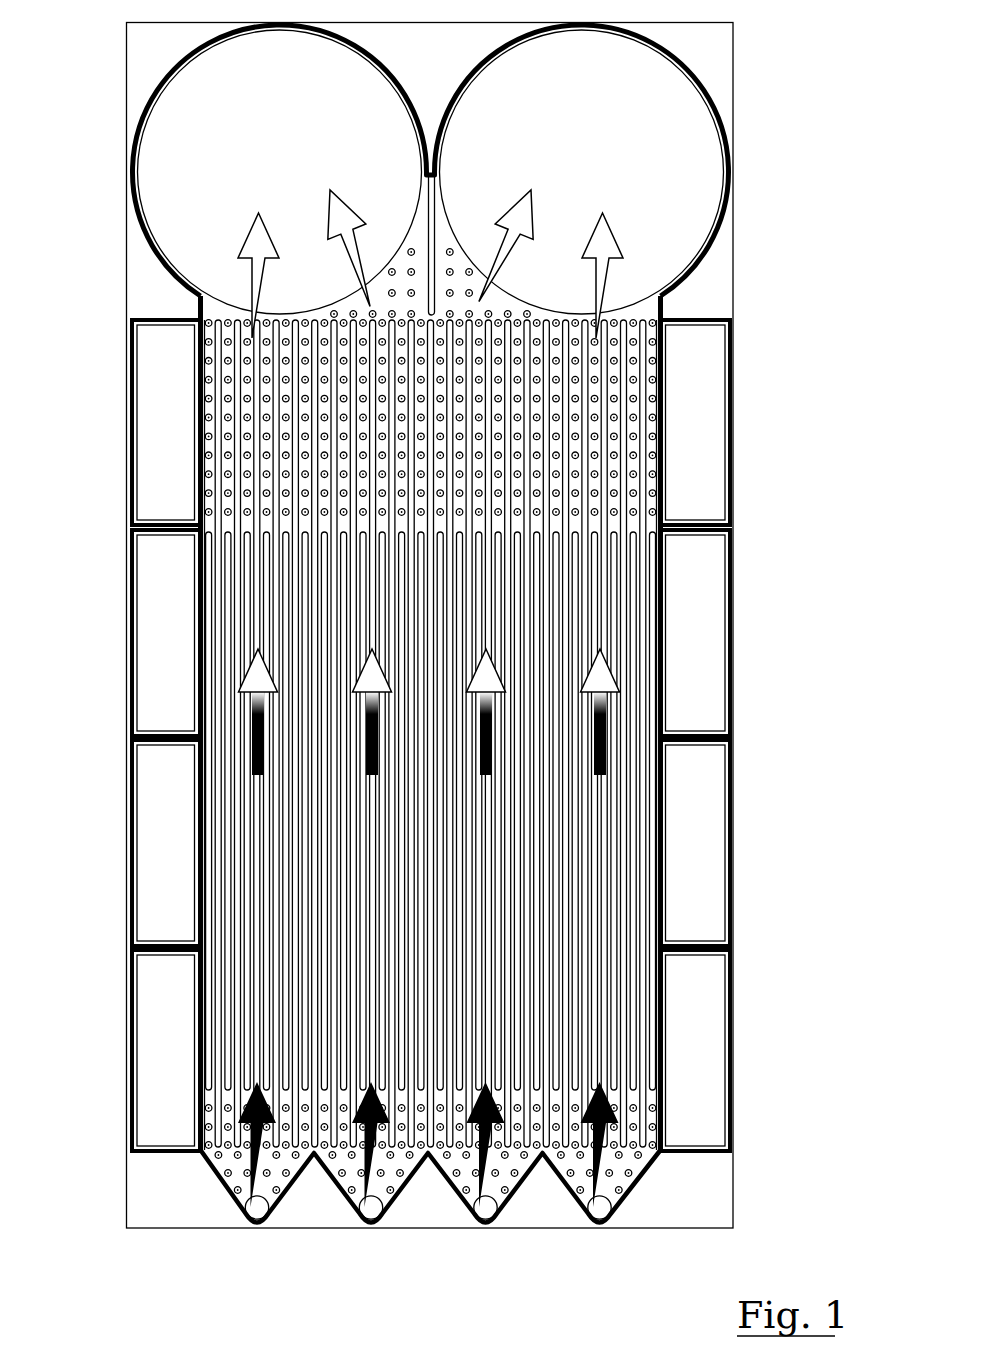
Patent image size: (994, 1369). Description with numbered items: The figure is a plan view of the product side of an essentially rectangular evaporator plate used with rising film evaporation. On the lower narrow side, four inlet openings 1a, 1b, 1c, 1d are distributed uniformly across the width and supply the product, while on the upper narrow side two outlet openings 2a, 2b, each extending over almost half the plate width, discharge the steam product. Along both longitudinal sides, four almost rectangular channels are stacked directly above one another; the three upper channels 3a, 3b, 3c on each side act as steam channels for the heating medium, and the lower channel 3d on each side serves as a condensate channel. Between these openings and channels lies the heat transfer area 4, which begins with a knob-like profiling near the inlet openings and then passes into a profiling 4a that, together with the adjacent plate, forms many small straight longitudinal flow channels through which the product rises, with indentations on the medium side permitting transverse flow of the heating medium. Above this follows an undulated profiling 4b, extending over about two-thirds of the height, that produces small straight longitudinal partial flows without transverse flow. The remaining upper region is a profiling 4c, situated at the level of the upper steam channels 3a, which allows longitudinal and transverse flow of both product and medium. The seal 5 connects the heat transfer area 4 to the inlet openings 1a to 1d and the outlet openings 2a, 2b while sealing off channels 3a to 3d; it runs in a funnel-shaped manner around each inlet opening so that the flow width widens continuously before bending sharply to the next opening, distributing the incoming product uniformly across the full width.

The inlet opening 1a is at (258, 1215).
The inlet opening 1b is at (371, 1215).
The inlet opening 1c is at (484, 1205).
The inlet opening 1d is at (603, 1213).
The outlet opening 2a is at (250, 177).
The outlet opening 2b is at (612, 158).
The steam channel 3a is at (150, 440).
The steam channel 3b is at (153, 618).
The steam channel 3c is at (152, 838).
The condensate channel 3d is at (152, 1033).
The heat transfer area 4 is at (613, 573).
The profiling 4a is at (637, 1132).
The undulated profiling 4b is at (618, 905).
The profiling 4c is at (597, 423).
The seal 5 is at (725, 218).